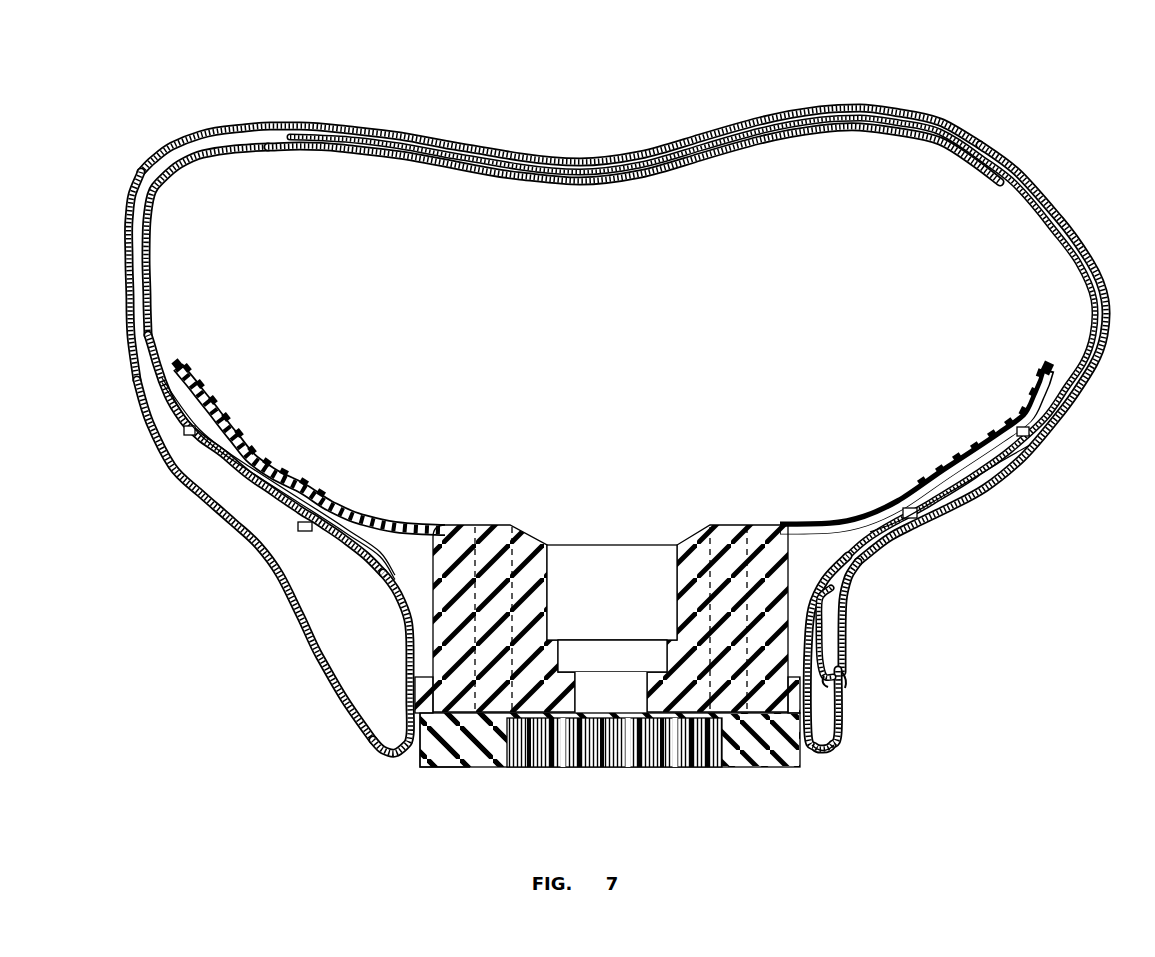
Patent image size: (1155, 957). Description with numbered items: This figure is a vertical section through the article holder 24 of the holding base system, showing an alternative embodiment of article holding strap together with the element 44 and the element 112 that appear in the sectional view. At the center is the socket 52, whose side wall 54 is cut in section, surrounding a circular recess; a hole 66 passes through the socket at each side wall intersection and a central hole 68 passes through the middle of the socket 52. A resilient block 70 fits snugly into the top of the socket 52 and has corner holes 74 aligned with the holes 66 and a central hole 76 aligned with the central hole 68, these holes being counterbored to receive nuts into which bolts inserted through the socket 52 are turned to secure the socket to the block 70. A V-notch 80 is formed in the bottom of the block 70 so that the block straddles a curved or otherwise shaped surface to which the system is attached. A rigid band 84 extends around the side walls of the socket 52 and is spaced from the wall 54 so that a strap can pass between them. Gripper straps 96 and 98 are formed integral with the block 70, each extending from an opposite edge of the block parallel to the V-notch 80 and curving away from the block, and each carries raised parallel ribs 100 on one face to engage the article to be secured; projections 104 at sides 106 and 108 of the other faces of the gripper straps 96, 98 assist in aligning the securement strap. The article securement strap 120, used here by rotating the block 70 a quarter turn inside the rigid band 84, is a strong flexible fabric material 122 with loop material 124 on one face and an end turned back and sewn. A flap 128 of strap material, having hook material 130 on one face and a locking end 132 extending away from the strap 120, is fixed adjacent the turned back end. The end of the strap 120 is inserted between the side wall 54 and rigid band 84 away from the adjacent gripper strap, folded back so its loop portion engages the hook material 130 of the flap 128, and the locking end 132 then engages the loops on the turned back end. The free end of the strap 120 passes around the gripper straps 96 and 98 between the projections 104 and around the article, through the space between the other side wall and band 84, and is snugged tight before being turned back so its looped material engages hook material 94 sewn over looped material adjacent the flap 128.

The article holder 24 is at (285, 98).
The base 44 is at (652, 745).
The socket 52 is at (421, 757).
The side wall 54 is at (423, 700).
The hole 66 is at (470, 760).
The central hole 68 is at (586, 745).
The resilient block 70 is at (693, 557).
The corner holes 74 is at (475, 525).
The central hole 76 is at (572, 653).
The V-notch 80 is at (562, 638).
The rigid band 84 is at (370, 742).
The hook material 94 is at (1078, 212).
The gripper strap 96 is at (176, 376).
The gripper strap 98 is at (1050, 362).
The raised parallel ribs 100 is at (268, 458).
The projection 104 is at (186, 432).
The side 106 is at (1012, 483).
The side 108 is at (228, 466).
The tube end 112 is at (832, 749).
The article securement strap 120 is at (292, 636).
The flexible fabric material 122 is at (134, 183).
The loop material 124 is at (1022, 162).
The flap 128 is at (987, 130).
The hook material 130 is at (848, 682).
The locking end 132 is at (848, 670).